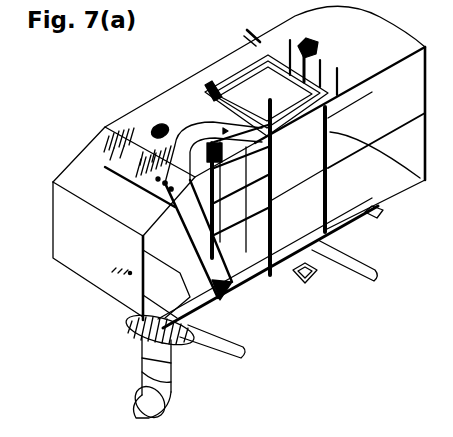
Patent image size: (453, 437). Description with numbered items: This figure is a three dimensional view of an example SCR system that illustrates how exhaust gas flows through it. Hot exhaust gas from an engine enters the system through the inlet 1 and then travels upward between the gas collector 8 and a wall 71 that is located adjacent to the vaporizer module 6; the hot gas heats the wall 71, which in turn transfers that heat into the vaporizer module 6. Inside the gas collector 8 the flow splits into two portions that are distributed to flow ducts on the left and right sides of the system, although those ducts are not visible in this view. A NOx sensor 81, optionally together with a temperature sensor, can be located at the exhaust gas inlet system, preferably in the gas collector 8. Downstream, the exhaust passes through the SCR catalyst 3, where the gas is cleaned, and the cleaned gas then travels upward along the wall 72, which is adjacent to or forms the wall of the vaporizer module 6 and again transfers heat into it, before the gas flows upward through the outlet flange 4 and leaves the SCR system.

The inlet 1 is at (197, 297).
The SCR catalyst 3 is at (271, 152).
The outlet flange 4 is at (200, 127).
The vaporizer module 6 is at (105, 167).
The gas collector 8 is at (186, 342).
The wall 71 is at (285, 277).
The wall 72 is at (270, 308).
The NOx sensor 81 is at (100, 252).